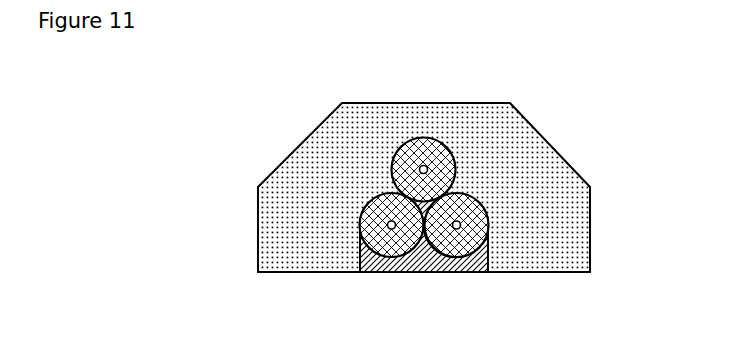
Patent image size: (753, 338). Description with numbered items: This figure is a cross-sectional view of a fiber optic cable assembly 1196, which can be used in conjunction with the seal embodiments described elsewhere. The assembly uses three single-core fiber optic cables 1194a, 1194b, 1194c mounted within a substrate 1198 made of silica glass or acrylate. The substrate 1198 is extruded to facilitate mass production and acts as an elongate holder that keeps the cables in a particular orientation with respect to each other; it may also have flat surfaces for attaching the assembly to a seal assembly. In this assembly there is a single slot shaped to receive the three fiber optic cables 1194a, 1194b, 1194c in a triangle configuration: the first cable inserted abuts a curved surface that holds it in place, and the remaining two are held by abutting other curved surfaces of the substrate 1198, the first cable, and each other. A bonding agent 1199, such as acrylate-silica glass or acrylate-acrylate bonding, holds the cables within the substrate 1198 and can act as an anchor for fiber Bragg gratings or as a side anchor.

The fiber optic cable assembly 1196 is at (214, 192).
The substrate 1198 is at (547, 187).
The fiber optic cable 1194a is at (422, 157).
The fiber optic cable 1194b is at (477, 218).
The fiber optic cable 1194c is at (375, 213).
The bonding agent 1199 is at (433, 265).